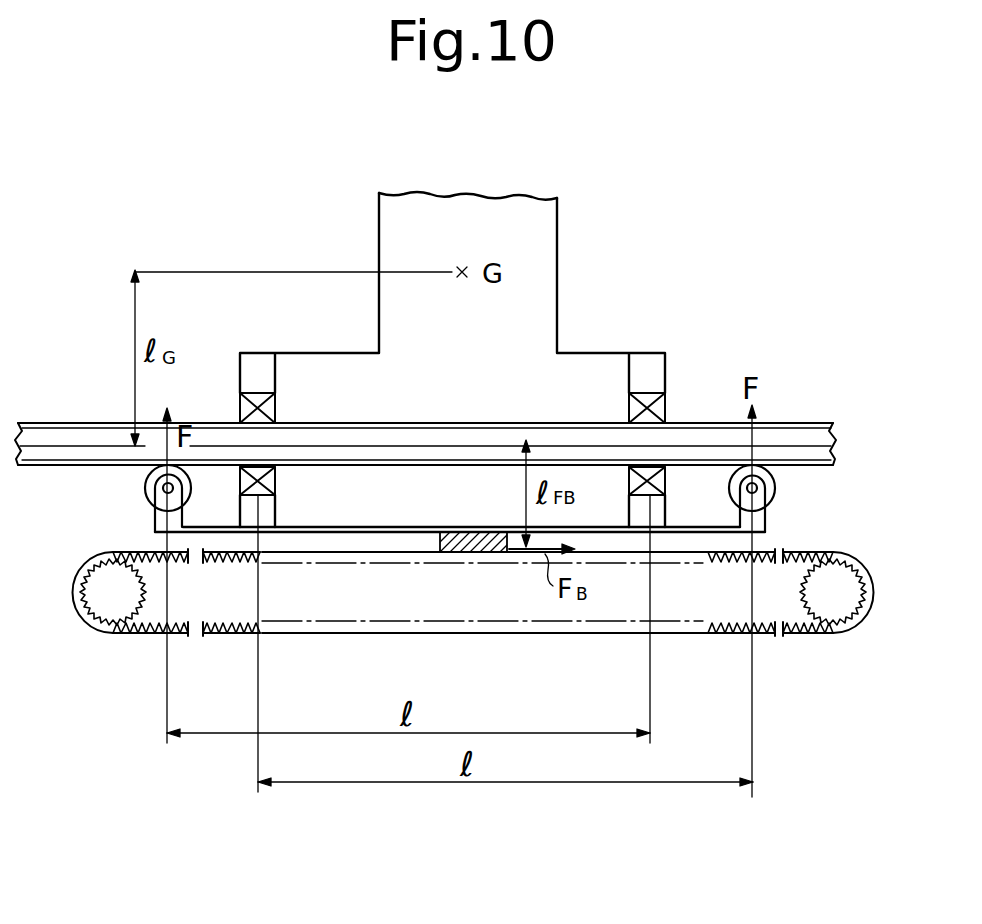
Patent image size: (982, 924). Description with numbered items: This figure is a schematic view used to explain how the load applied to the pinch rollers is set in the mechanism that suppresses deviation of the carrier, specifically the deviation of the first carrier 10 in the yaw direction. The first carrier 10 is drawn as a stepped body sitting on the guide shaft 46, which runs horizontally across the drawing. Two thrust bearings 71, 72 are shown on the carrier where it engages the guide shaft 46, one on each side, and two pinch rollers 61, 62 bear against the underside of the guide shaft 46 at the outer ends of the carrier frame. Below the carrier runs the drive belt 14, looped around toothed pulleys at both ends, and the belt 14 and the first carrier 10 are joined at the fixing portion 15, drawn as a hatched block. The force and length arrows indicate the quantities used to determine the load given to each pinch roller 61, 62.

The first carrier 10 is at (558, 278).
The drive belt 14 is at (560, 634).
The fixing portion 15 is at (456, 553).
The guide shaft 46 is at (815, 423).
The pinch roller 61 is at (146, 482).
The pinch roller 62 is at (778, 486).
The thrust bearing 71 is at (240, 407).
The thrust bearing 72 is at (662, 405).